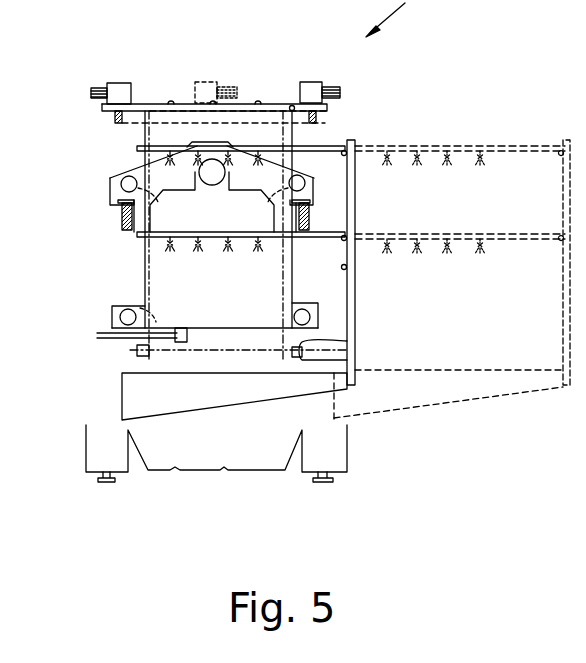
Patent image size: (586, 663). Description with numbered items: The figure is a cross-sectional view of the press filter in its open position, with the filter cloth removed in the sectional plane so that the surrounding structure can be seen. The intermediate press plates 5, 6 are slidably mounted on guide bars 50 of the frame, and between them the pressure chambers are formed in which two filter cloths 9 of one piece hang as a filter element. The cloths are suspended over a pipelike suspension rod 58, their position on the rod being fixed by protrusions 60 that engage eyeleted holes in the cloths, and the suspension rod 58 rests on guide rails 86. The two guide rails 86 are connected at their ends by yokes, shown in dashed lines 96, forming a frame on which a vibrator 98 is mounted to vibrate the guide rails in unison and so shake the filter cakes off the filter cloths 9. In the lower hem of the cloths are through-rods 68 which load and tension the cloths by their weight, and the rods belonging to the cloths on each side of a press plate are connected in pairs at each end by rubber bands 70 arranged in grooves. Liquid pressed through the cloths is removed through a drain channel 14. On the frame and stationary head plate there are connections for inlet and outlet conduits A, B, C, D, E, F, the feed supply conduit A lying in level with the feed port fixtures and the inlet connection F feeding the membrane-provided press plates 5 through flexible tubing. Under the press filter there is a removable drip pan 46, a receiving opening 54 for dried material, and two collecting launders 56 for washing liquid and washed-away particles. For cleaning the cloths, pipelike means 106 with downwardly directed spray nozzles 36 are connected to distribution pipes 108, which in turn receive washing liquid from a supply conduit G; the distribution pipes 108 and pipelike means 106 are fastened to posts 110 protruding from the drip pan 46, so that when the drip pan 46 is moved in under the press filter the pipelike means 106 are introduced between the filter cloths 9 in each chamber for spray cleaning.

The filter cloths 9 is at (160, 357).
The drain channel 14 is at (300, 178).
The spray nozzles 36 is at (247, 233).
The drip pan 46 is at (196, 400).
The guide bars 50 is at (121, 222).
The receiving opening 54 is at (272, 460).
The collecting launders 56 is at (98, 460).
The suspension rod 58 is at (292, 105).
The protrusions 60 is at (162, 103).
The through-rods 68 is at (303, 360).
The rubber bands 70 is at (139, 357).
The guide rails 86 is at (320, 117).
The yokes 96 is at (270, 103).
The vibrator 98 is at (117, 83).
The pipelike means 106 is at (137, 150).
The distribution pipes 108 is at (346, 155).
The posts 110 is at (353, 303).
The press plate 5 is at (214, 179).
The press plate 6 is at (278, 156).
The feed supply conduit A is at (212, 185).
The inlet and outlet conduit connection B is at (121, 188).
The inlet and outlet conduit connection C is at (308, 183).
The inlet and outlet conduit connection D is at (114, 313).
The inlet and outlet conduit connection E is at (310, 313).
The inlet connection F is at (112, 337).
The supply conduit for washing liquid G is at (346, 265).